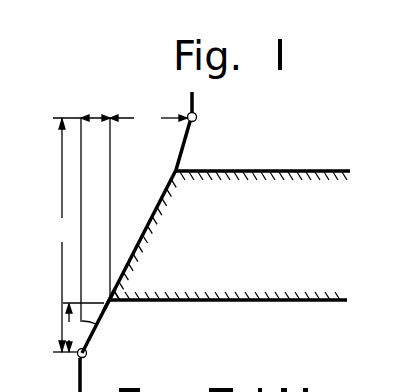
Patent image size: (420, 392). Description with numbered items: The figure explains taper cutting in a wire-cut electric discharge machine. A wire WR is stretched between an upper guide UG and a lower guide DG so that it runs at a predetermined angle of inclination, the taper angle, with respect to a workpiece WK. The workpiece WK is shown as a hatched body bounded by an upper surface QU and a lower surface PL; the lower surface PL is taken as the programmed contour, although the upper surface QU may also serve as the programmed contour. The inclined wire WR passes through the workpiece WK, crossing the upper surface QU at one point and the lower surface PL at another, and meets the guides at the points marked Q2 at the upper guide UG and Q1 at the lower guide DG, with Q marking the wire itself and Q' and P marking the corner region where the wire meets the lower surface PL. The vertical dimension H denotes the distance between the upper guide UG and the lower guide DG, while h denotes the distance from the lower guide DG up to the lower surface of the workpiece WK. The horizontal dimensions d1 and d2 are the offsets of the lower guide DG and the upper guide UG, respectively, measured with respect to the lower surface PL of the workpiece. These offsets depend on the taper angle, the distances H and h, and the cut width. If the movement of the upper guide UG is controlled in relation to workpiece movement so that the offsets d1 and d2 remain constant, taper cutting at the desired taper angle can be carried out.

The upper guide UG is at (196, 114).
The upper pivot point Q2 is at (203, 126).
The inclined wall line Q is at (190, 146).
The upper surface of the workpiece QU is at (252, 171).
The workpiece WK is at (296, 177).
The wire WR is at (94, 326).
The lower plane point P is at (112, 304).
The lower surface of the workpiece PL is at (228, 300).
The intermediate point Q' is at (122, 292).
The lower pivot point Q1 is at (98, 374).
The lower guide DG is at (87, 357).
The distance between the upper guide and the lower guide H is at (93, 235).
The distance from the lower guide to the lower surface of the workpiece h is at (83, 327).
The offset of the lower guide d1 is at (100, 100).
The offset of the upper guide d2 is at (148, 117).